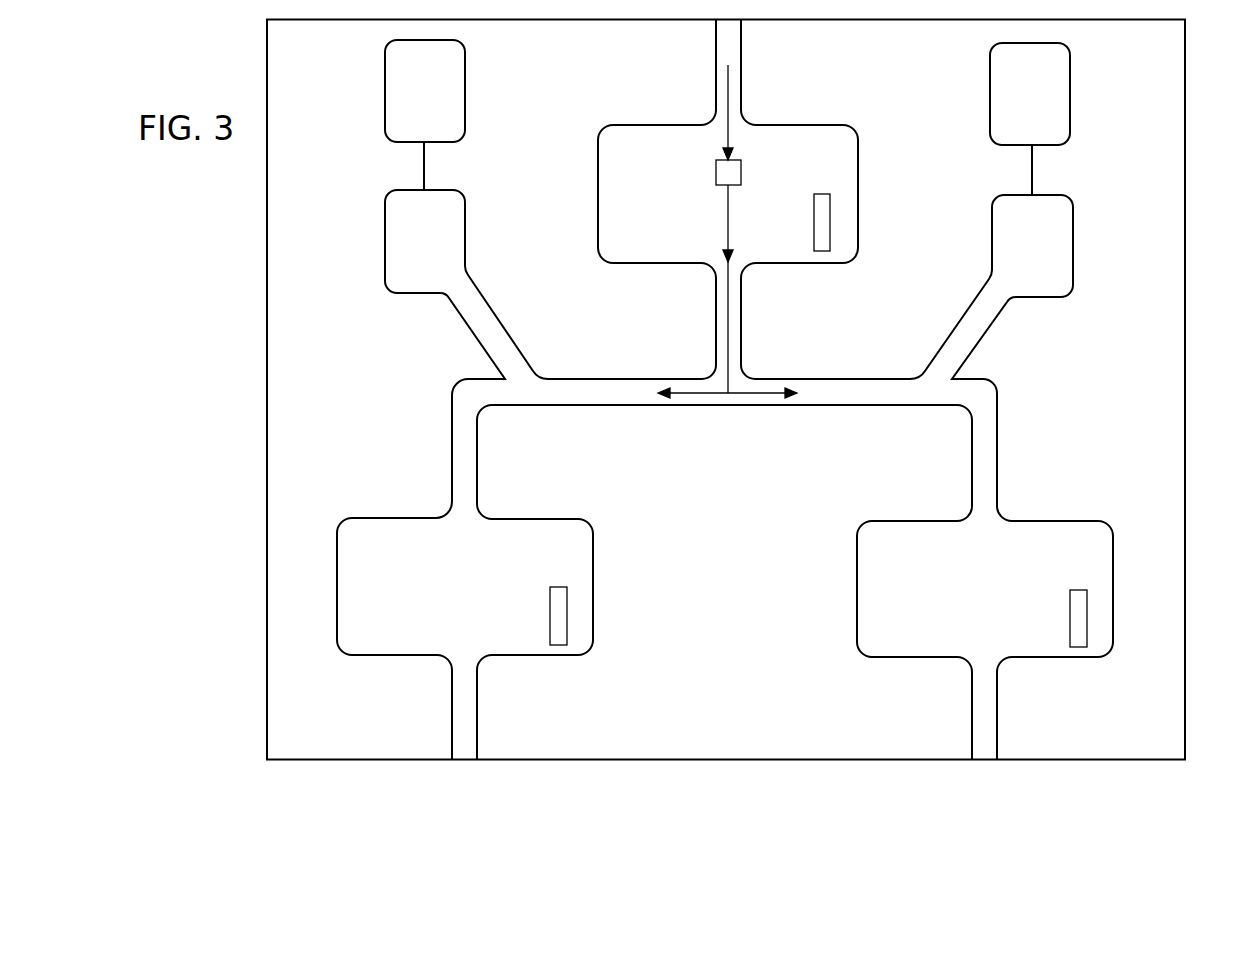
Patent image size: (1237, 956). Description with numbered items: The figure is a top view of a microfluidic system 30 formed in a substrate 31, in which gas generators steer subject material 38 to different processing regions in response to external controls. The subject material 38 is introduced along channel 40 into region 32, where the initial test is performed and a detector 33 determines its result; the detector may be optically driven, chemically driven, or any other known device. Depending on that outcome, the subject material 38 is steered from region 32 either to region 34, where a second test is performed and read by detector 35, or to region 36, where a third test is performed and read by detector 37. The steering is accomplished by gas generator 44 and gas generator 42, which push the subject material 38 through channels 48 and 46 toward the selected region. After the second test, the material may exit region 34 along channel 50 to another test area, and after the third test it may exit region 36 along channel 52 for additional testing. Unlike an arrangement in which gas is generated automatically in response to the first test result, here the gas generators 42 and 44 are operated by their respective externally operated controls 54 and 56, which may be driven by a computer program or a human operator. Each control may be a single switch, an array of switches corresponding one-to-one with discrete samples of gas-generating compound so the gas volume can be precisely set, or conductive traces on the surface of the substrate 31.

The microfluidic system 30 is at (750, 390).
The substrate 31 is at (1172, 236).
The region 32 is at (822, 130).
The detector 33 is at (825, 245).
The region 34 is at (1077, 530).
The detector 35 is at (1077, 638).
The region 36 is at (555, 527).
The detector 37 is at (557, 635).
The subject material 38 is at (727, 170).
The channel 40 is at (735, 78).
The gas generator 42 is at (1050, 203).
The gas generator 44 is at (440, 200).
The channel 46 is at (860, 400).
The channel 48 is at (618, 397).
The channel 50 is at (992, 705).
The channel 52 is at (472, 705).
The external control 54 is at (1062, 68).
The external control 56 is at (395, 62).